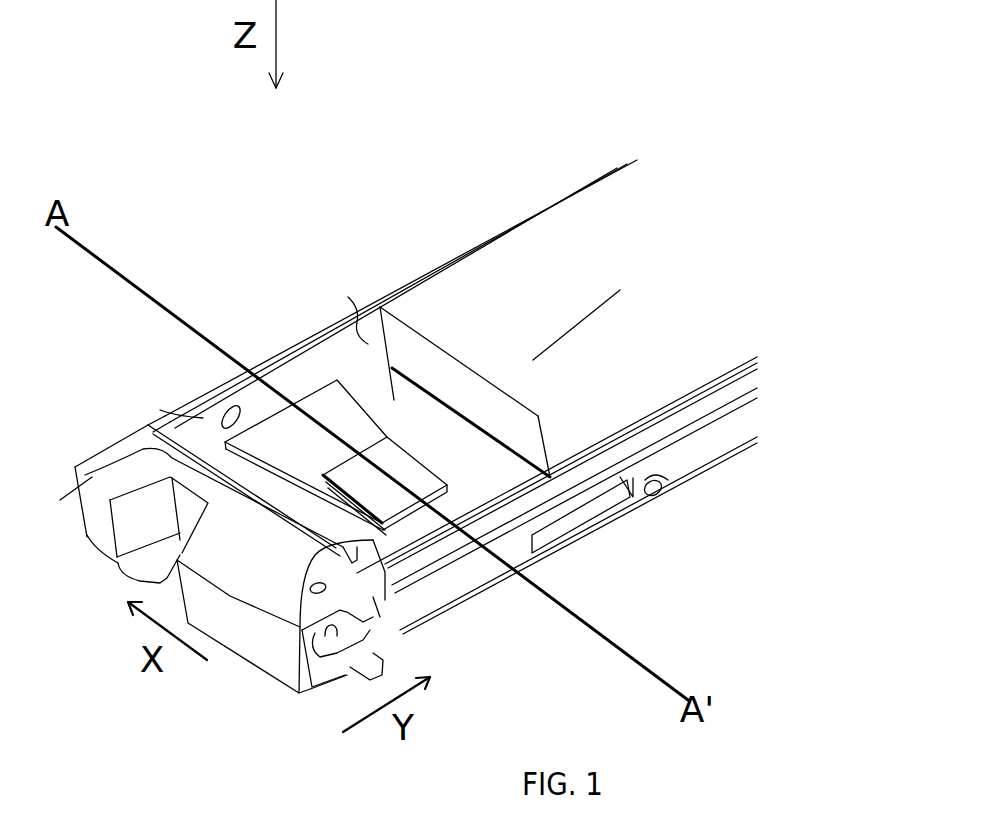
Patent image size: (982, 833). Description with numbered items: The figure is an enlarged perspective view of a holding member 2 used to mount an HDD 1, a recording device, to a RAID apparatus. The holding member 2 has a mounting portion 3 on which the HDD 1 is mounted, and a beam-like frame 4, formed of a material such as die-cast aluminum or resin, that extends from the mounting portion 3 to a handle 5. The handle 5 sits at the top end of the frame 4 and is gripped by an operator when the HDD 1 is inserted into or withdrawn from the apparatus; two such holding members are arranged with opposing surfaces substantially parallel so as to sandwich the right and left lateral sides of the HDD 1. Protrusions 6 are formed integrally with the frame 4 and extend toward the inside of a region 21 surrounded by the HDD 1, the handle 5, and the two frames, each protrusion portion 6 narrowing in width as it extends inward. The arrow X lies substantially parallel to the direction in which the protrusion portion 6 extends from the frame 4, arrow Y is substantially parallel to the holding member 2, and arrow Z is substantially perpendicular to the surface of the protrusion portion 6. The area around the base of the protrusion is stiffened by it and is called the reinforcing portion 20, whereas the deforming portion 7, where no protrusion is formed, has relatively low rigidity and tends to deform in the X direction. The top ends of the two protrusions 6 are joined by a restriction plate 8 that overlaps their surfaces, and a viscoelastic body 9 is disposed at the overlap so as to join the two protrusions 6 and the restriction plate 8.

The HDD 1 is at (708, 327).
The holding member 2 is at (328, 198).
The mounting portion 3 is at (611, 148).
The frame 4 is at (353, 265).
The handle 5 is at (142, 526).
The protrusion portion 6 is at (287, 438).
The deforming portion 7 is at (163, 410).
The restriction plate 8 is at (620, 290).
The viscoelastic body 9 is at (357, 508).
The reinforcing portion 20 is at (293, 381).
The region 21 is at (393, 378).